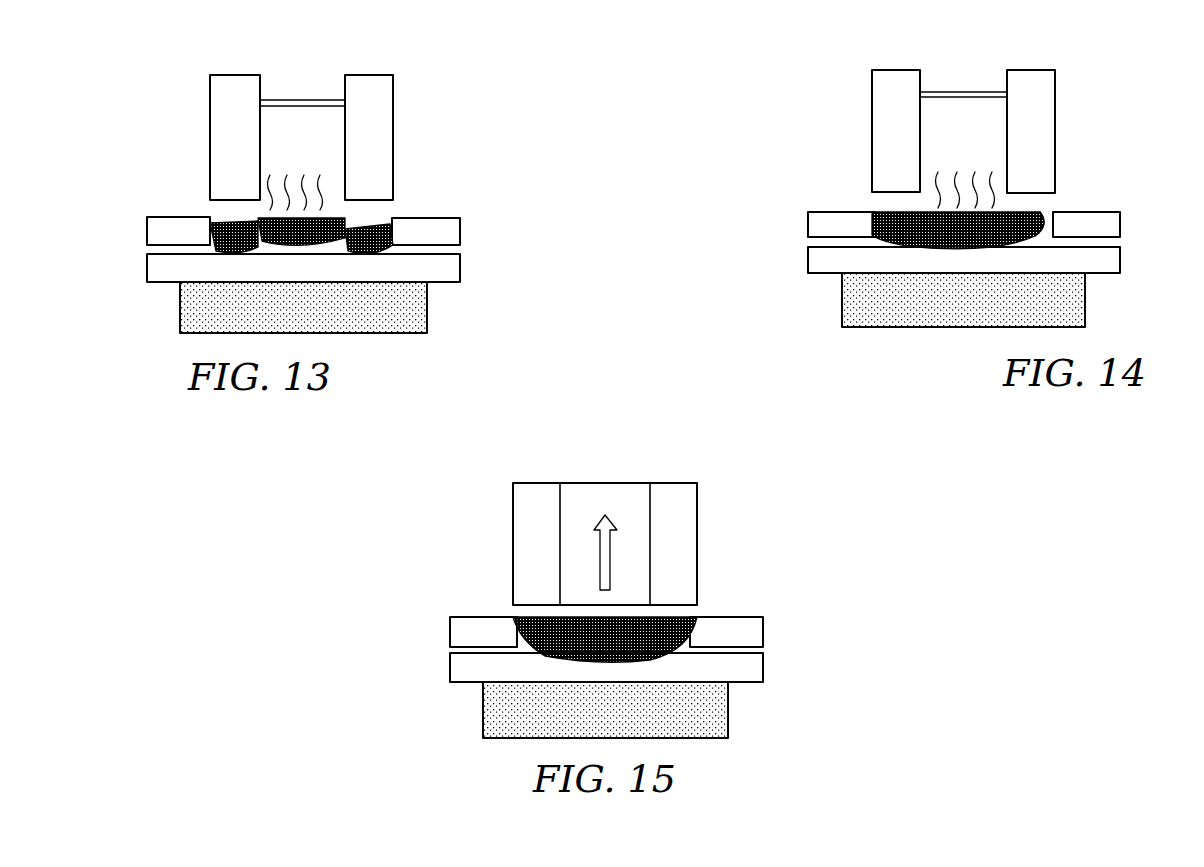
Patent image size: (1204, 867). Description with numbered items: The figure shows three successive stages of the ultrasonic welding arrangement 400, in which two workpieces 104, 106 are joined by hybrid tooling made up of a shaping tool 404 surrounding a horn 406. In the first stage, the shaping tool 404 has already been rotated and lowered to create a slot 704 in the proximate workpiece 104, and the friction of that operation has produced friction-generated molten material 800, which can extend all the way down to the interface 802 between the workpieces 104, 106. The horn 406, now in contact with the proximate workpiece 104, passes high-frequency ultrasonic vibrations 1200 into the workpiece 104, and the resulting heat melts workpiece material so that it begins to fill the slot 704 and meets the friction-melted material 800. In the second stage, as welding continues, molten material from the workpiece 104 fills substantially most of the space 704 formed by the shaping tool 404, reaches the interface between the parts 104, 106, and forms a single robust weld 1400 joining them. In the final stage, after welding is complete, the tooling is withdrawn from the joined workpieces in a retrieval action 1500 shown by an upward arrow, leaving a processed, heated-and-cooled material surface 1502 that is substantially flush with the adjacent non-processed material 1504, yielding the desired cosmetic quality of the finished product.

In FIG. 13, the proximate workpiece 104 is at (462, 233).
In FIG. 14, the proximate workpiece 104 is at (812, 207).
In FIG. 13, the distal workpiece 106 is at (456, 284).
In FIG. 14, the distal workpiece 106 is at (835, 276).
In FIG. 15, the distal workpiece 106 is at (752, 683).
In FIG. 13, the ultrasonic welding arrangement 400 is at (188, 44).
In FIG. 13, the shaping tool 404 is at (396, 135).
In FIG. 14, the shaping tool 404 is at (872, 132).
In FIG. 15, the shaping tool 404 is at (450, 641).
In FIG. 13, the horn 406 is at (328, 166).
In FIG. 14, the horn 406 is at (989, 163).
In FIG. 15, the horn 406 is at (590, 483).
In FIG. 13, the slot 704 is at (389, 222).
In FIG. 14, the slot 704 is at (1045, 222).
In FIG. 13, the friction-generated molten material 800 is at (212, 226).
In FIG. 14, the interface 802 is at (800, 243).
In FIG. 15, the interface 802 is at (772, 652).
In FIG. 13, the ultrasonic vibrations 1200 is at (275, 240).
In FIG. 14, the weld 1400 is at (876, 213).
In FIG. 15, the retrieval action 1500 is at (600, 561).
In FIG. 15, the processed material surface 1502 is at (673, 619).
In FIG. 15, the non-processed material 1504 is at (490, 615).